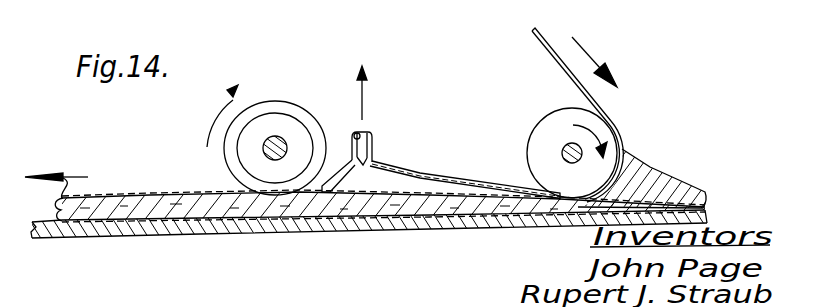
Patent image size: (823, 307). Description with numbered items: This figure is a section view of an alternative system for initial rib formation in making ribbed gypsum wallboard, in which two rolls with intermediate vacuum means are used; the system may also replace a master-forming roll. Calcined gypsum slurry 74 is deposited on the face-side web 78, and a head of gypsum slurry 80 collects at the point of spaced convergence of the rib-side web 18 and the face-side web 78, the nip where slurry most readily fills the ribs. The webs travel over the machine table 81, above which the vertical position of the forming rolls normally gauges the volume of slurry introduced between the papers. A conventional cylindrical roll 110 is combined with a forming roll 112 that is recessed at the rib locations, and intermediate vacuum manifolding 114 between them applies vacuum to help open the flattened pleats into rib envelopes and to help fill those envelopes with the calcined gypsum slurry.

The rib-side web 18 is at (127, 198).
The face-side web 78 is at (120, 236).
The machine table 81 is at (217, 234).
The calcined gypsum slurry 74 is at (390, 231).
The forming roll 112 is at (272, 102).
The intermediate vacuum manifolding 114 is at (400, 163).
The conventional cylindrical roll 110 is at (548, 117).
The head of gypsum slurry 80 is at (667, 183).